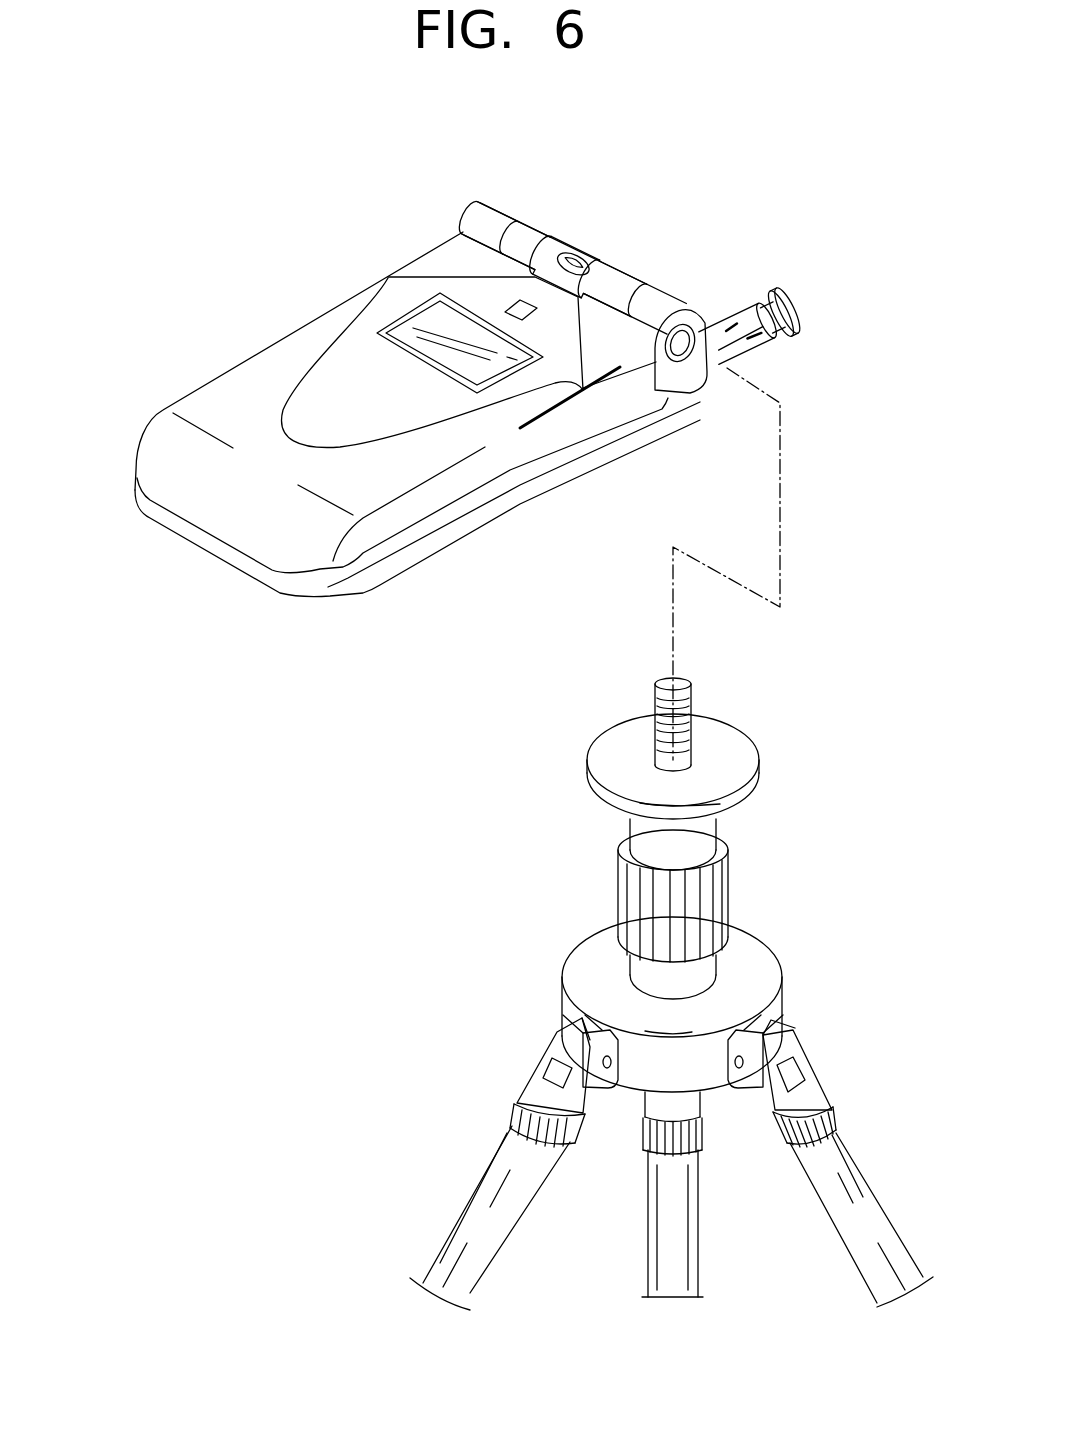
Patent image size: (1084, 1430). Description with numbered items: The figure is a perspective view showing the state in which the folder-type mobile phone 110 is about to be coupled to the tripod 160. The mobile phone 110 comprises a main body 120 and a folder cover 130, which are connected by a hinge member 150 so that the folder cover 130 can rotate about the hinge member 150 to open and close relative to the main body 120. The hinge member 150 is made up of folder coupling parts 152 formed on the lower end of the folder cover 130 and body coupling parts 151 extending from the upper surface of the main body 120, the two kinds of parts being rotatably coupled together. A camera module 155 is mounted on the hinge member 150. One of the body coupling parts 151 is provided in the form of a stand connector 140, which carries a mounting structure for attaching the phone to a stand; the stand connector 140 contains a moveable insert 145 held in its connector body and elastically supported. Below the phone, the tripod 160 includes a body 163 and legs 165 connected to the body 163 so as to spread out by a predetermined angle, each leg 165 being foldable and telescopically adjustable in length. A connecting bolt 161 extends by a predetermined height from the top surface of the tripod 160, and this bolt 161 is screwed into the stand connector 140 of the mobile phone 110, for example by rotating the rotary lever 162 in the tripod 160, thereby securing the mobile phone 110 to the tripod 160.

The mobile phone 110 is at (158, 362).
The main body 120 is at (258, 567).
The folder cover 130 is at (230, 515).
The stand connector 140 is at (667, 310).
The insert 145 is at (680, 357).
The hinge member 150 is at (563, 217).
The body coupling part 151 is at (498, 210).
The folder coupling part 152 is at (533, 233).
The camera module 155 is at (580, 247).
The tripod 160 is at (676, 991).
The connecting bolt 161 is at (690, 720).
The rotary lever 162 is at (722, 888).
The body 163 is at (762, 972).
The legs 165 is at (867, 1180).